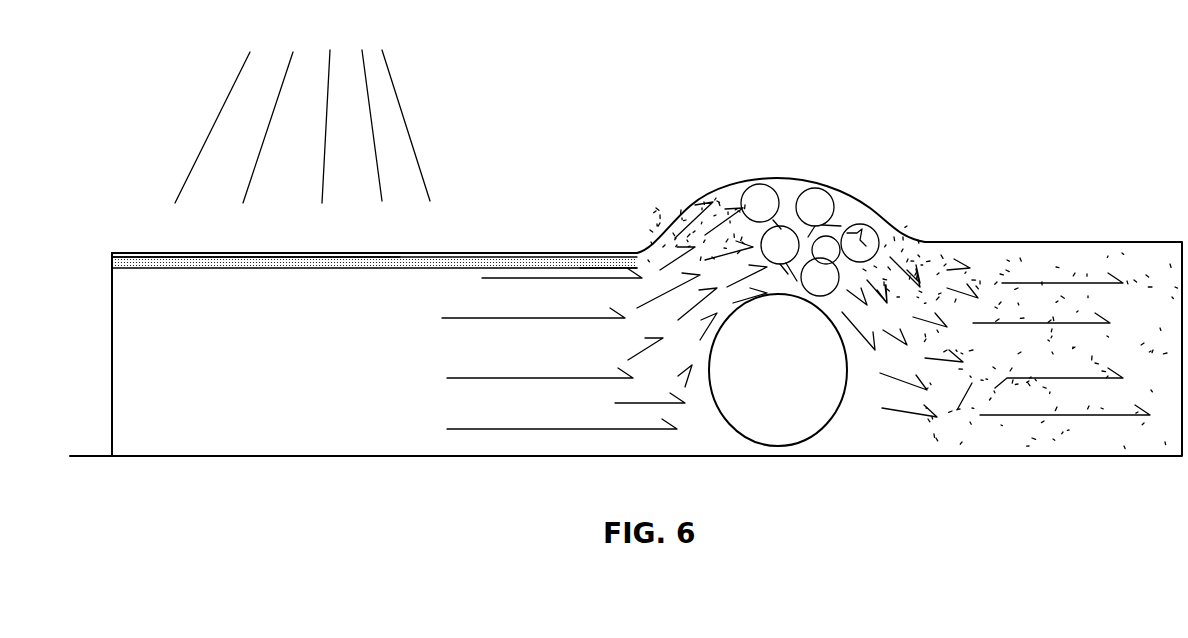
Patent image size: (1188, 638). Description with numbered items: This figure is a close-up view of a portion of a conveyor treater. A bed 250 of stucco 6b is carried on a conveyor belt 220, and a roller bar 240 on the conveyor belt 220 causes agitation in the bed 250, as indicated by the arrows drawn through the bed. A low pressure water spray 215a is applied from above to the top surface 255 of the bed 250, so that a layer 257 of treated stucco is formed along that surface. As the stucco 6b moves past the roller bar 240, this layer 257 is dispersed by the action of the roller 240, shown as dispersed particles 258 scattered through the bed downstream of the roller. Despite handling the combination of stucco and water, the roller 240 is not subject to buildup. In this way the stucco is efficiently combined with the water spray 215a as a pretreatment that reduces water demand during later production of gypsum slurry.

The spray 215a is at (430, 108).
The layer of treated stucco 257 is at (146, 262).
The top surface 255 is at (477, 253).
The stucco 6b is at (597, 263).
The roller bar 240 is at (773, 340).
The dispersed particles 258 is at (1017, 317).
The bed 250 is at (568, 343).
The conveyor belt 220 is at (147, 456).